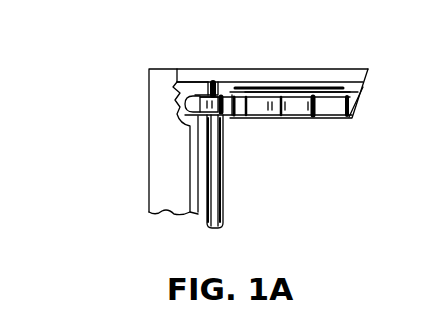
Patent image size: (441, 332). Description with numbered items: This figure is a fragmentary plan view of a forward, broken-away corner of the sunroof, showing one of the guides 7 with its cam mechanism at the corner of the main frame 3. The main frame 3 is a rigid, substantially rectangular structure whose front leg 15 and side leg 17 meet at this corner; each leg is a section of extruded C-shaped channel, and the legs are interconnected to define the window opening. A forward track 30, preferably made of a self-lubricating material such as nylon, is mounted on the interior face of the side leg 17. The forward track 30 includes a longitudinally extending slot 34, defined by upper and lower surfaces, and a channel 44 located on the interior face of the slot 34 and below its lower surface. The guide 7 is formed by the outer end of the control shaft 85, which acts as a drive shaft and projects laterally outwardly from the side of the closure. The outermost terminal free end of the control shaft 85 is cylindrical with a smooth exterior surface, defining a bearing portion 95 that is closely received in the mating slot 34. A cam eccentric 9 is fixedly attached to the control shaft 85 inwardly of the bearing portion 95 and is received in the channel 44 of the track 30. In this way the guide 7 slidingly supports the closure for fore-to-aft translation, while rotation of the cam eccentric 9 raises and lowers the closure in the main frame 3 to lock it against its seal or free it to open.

The main frame 3 is at (149, 69).
The guide 7 is at (212, 70).
The cam eccentric 9 is at (221, 117).
The front leg 15 is at (148, 190).
The side leg 17 is at (222, 84).
The forward track 30 is at (366, 86).
The slot 34 is at (313, 75).
The channel 44 is at (310, 116).
The control shaft 85 is at (226, 188).
The bearing portion 95 is at (242, 90).